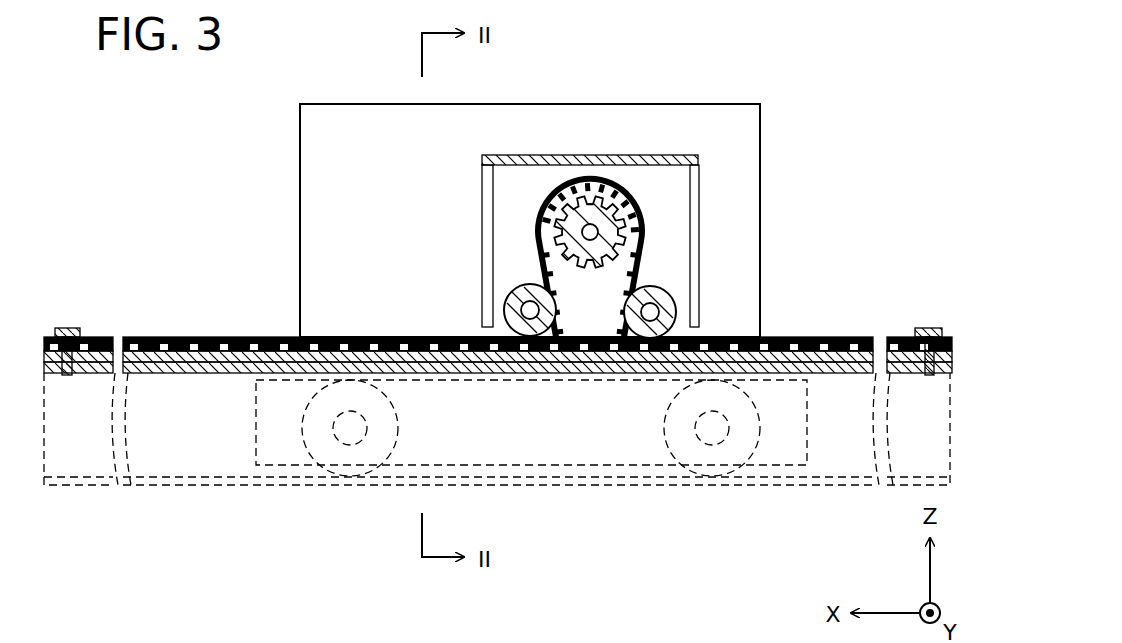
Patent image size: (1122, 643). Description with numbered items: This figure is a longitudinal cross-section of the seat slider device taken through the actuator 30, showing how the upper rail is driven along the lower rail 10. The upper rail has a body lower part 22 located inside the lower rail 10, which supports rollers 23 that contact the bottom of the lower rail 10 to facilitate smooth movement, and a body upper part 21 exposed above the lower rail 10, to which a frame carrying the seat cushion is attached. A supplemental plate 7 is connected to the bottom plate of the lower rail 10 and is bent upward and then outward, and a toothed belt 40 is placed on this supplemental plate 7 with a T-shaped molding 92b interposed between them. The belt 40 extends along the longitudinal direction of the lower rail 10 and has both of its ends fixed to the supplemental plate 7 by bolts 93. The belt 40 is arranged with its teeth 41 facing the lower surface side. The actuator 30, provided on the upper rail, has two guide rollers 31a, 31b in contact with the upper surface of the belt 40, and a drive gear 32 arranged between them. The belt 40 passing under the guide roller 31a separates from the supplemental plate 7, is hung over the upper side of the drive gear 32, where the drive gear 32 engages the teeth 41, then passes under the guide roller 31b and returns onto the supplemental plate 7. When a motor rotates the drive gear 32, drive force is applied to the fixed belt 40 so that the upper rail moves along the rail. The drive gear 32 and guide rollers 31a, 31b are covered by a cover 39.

The supplemental plate 7 is at (498, 311).
The lower rail 10 is at (183, 480).
The body upper part 21 is at (745, 157).
The body lower part 22 is at (585, 435).
The rollers 23 is at (307, 457).
The actuator 30 is at (576, 180).
The guide roller 31a is at (515, 297).
The guide roller 31b is at (665, 320).
The drive gear 32 is at (578, 212).
The cover 39 is at (653, 157).
The belt 40 is at (265, 372).
The teeth 41 is at (572, 295).
The T-shaped molding 92b is at (208, 360).
The bolts 93 is at (63, 335).